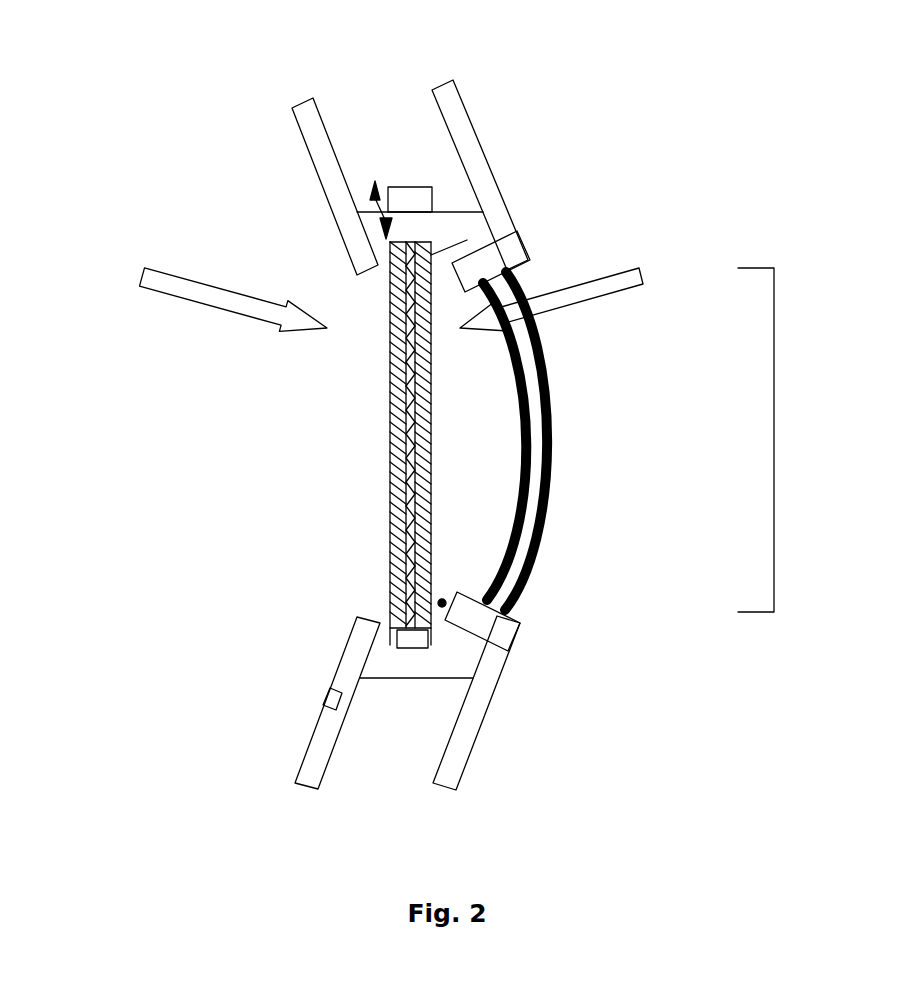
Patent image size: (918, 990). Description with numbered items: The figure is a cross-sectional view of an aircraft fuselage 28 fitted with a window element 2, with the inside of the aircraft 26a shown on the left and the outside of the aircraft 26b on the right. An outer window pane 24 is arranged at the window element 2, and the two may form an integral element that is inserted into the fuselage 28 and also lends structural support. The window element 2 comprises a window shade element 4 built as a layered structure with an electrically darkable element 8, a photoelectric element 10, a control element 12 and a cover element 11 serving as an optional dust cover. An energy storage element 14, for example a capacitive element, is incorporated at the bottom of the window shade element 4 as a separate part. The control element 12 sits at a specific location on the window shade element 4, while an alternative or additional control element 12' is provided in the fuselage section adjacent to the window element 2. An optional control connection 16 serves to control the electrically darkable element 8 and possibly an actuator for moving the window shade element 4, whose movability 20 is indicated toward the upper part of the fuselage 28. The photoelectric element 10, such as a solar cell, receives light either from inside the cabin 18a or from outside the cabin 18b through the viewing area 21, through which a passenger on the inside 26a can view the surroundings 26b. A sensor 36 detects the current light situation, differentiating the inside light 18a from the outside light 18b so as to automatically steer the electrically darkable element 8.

The window element 2 is at (145, 197).
The window shade element 4 is at (410, 187).
The electrically darkable element 8 is at (400, 390).
The photoelectric element 10 is at (433, 382).
The cover element 11 is at (405, 447).
The control element 12 is at (352, 606).
The control element 12' is at (304, 703).
The energy storage element 14 is at (447, 628).
The control connection 16 is at (460, 261).
The light from inside the cabin 18a is at (205, 295).
The light from outside the cabin 18b is at (576, 295).
The movement of the window shade element 20 is at (390, 207).
The viewing area 21 is at (774, 430).
The outer window pane 24 is at (553, 437).
The inside of the aircraft 26a is at (167, 665).
The outside of the aircraft 26b is at (729, 665).
The fuselage 28 is at (453, 110).
The sensor 36 is at (452, 600).